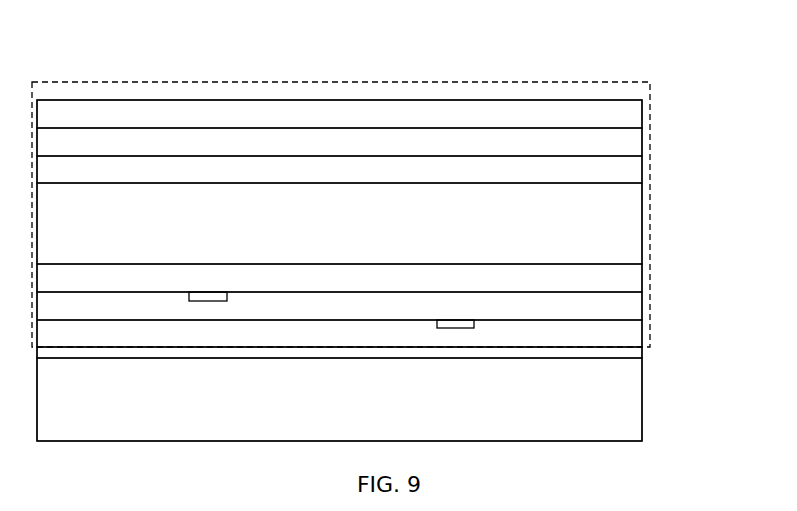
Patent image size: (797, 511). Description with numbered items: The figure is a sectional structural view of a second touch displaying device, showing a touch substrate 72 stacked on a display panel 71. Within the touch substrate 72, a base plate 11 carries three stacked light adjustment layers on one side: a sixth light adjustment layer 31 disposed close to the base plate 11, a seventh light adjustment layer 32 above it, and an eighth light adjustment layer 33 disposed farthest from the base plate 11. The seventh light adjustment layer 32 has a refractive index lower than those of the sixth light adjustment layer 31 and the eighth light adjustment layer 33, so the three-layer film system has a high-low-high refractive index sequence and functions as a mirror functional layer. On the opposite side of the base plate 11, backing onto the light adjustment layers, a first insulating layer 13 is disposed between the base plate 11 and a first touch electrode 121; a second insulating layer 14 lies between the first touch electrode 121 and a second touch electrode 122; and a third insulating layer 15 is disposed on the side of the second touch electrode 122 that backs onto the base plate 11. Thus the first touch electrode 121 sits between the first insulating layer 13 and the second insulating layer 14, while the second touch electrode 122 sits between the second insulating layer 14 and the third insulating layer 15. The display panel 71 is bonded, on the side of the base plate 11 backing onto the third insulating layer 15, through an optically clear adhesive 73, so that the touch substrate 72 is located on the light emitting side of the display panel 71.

The touch substrate 72 is at (570, 82).
The eighth light adjustment layer 33 is at (585, 112).
The seventh light adjustment layer 32 is at (585, 139).
The sixth light adjustment layer 31 is at (591, 167).
The base plate 11 is at (593, 221).
The first insulating layer 13 is at (586, 278).
The second insulating layer 14 is at (586, 303).
The third insulating layer 15 is at (591, 331).
The optically clear adhesive 73 is at (593, 352).
The display panel 71 is at (593, 413).
The first touch electrode 121 is at (209, 296).
The second touch electrode 122 is at (455, 324).